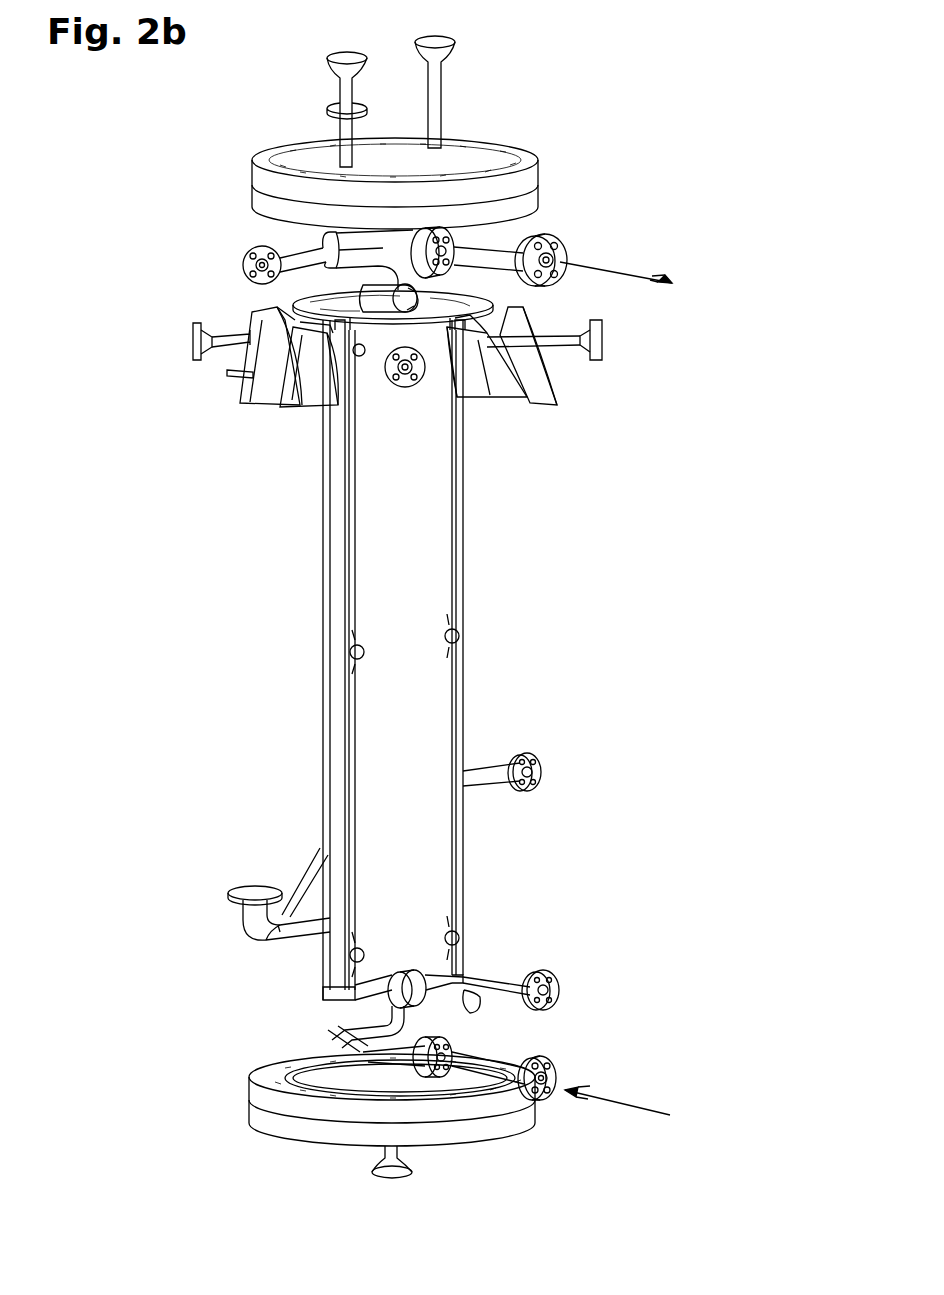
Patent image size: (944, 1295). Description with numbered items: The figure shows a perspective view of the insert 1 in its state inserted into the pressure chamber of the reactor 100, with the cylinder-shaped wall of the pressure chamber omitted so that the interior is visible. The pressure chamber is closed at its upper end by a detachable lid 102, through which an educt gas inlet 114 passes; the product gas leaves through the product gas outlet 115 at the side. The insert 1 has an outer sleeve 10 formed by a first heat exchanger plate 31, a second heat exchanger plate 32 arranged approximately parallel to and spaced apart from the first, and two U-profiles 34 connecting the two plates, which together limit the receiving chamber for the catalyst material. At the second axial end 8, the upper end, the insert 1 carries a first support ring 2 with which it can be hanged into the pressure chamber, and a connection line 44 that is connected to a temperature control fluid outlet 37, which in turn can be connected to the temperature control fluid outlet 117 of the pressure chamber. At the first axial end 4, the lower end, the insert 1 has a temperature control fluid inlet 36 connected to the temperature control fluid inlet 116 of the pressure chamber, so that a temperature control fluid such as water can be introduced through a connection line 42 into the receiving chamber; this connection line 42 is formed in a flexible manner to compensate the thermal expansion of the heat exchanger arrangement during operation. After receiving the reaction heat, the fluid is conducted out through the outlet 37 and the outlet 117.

The reactor 100 is at (203, 131).
The insert 1 is at (242, 548).
The first support ring 2 is at (300, 302).
The first axial end 4 is at (472, 1010).
The second axial end 8 is at (307, 407).
The outer sleeve 10 is at (463, 570).
The first heat exchanger plate 31 is at (463, 487).
The second heat exchanger plate 32 is at (327, 580).
The U-profiles 34 is at (337, 507).
The temperature control fluid inlet 36 is at (420, 1033).
The temperature control fluid outlet 37 is at (412, 235).
The connection line 42 is at (330, 1033).
The connection line 44 is at (333, 248).
The detachable lid 102 is at (505, 150).
The educt gas inlet 114 is at (338, 104).
The product gas outlet 115 is at (193, 342).
The temperature control fluid inlet 116 is at (560, 1078).
The temperature control fluid outlet 117 is at (565, 262).